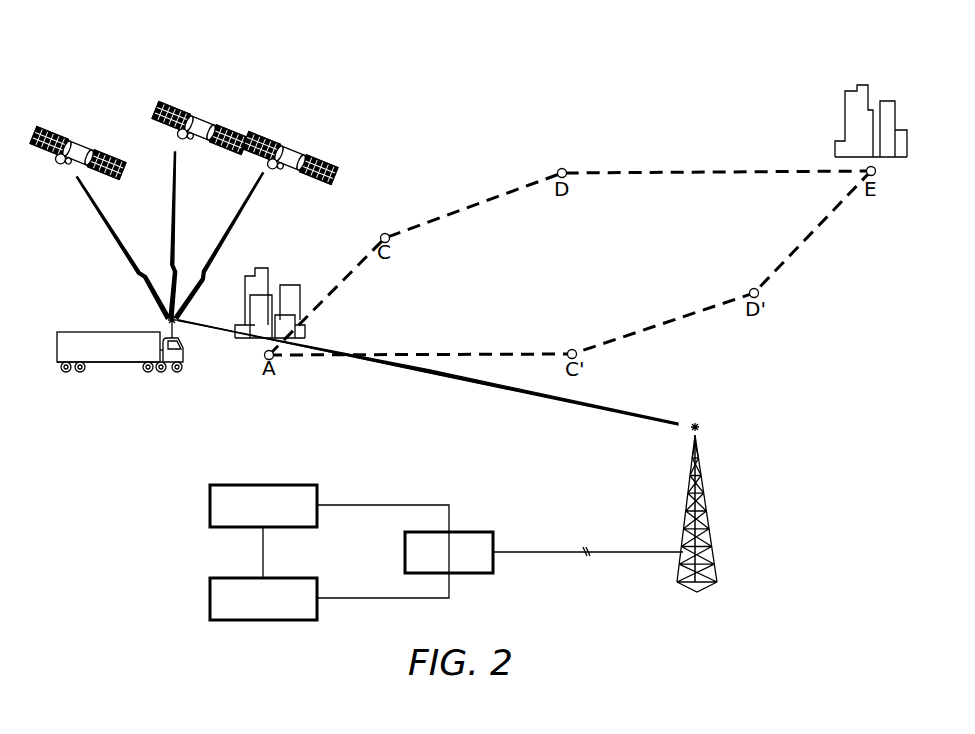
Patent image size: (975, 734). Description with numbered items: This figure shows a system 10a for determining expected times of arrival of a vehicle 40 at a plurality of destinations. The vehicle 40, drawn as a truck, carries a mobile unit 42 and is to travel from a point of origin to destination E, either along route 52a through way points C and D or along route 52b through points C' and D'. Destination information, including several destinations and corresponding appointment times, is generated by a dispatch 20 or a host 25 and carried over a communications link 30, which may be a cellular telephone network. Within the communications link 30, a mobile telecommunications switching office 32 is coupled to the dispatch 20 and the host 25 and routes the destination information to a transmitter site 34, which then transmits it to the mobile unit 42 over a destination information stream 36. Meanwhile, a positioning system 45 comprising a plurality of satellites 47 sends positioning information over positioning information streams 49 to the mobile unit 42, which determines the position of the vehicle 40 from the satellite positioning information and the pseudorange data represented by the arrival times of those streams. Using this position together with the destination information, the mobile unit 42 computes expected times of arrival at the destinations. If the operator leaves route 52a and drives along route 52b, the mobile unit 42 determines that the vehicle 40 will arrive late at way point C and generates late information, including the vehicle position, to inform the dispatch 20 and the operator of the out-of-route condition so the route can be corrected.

The system 10a is at (568, 121).
The dispatch 20 is at (210, 503).
The host 25 is at (210, 598).
The communications link 30 is at (604, 587).
The mobile telecommunications switching office 32 is at (475, 532).
The transmitter site 34 is at (710, 525).
The destination information stream 36 is at (615, 408).
The vehicle 40 is at (95, 335).
The mobile unit 42 is at (184, 365).
The positioning system 45 is at (312, 88).
The satellites 47 is at (82, 143).
The positioning information streams 49 is at (268, 224).
The route 52a is at (470, 200).
The route 52b is at (655, 317).